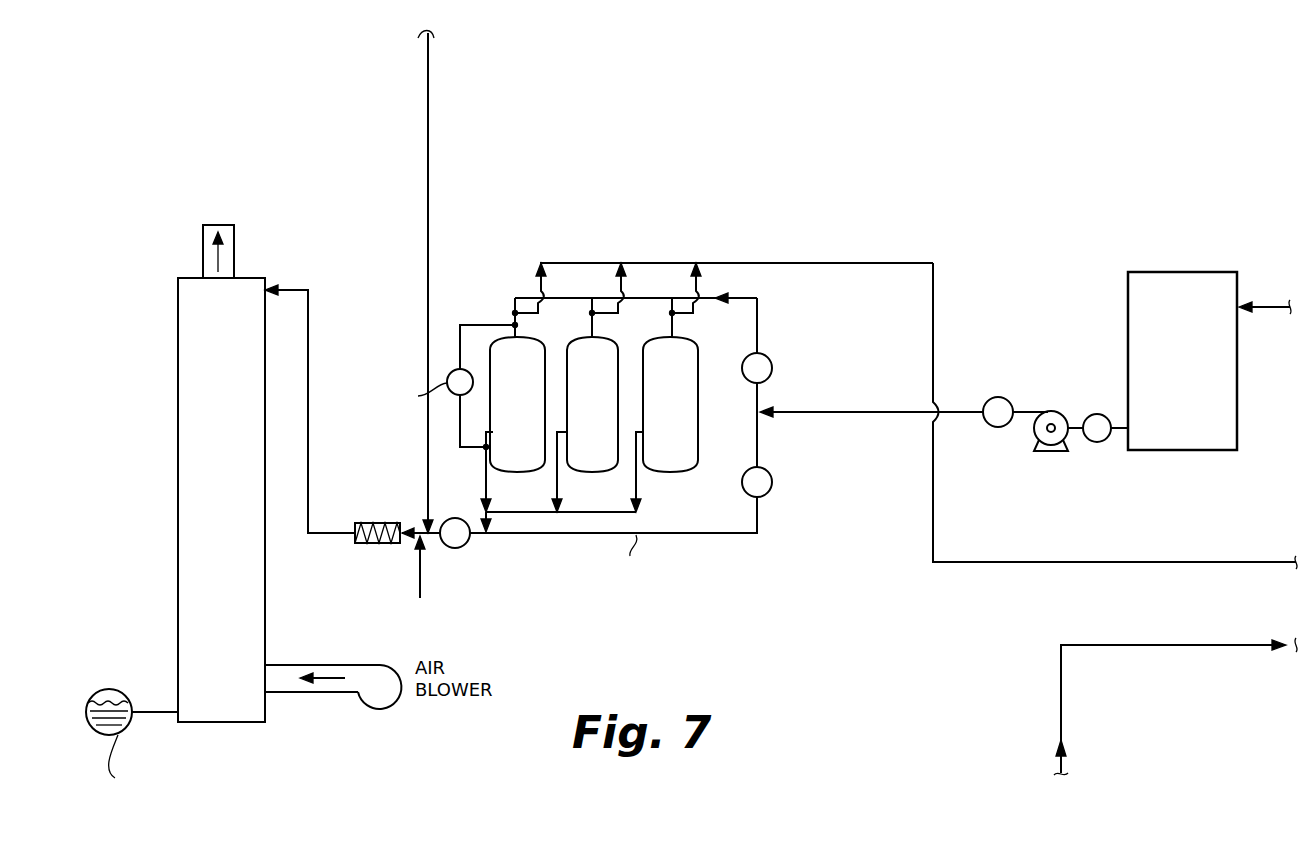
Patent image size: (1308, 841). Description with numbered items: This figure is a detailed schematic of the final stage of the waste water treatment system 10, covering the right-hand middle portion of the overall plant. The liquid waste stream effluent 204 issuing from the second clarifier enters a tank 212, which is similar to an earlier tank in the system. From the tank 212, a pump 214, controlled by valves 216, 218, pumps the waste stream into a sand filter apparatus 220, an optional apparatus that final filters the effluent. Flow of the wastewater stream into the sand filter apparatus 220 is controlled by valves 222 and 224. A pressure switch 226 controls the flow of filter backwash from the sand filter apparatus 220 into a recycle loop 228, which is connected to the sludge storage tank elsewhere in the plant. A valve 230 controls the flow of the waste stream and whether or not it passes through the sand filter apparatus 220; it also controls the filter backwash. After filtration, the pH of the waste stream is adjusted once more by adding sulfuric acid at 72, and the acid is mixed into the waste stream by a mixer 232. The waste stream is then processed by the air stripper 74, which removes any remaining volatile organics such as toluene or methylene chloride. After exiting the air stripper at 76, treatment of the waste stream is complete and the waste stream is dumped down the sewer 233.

The water treatment system 10 is at (972, 282).
The sulfuric acid addition point 72 is at (420, 580).
The air stripper 74 is at (178, 440).
The air stripper exit 76 is at (150, 711).
The liquid waste stream effluent 204 is at (1262, 305).
The tank 212 is at (1190, 272).
The pump 214 is at (1058, 410).
The valve 216 is at (1100, 442).
The valve 218 is at (995, 397).
The sand filter apparatus 220 is at (710, 503).
The valve 222 is at (772, 354).
The valve 224 is at (772, 490).
The pressure switch 226 is at (452, 372).
The recycle loop 228 is at (826, 264).
The valve 230 is at (462, 547).
The mixer 232 is at (380, 545).
The sewer 233 is at (107, 689).